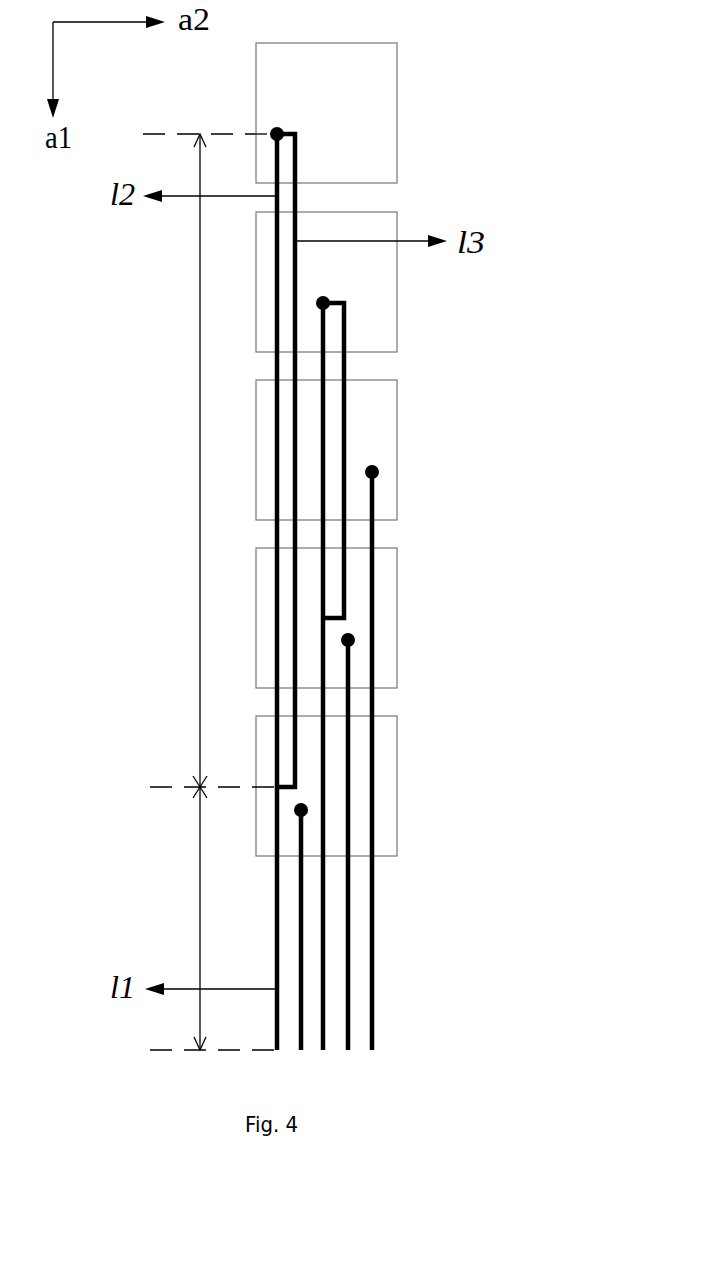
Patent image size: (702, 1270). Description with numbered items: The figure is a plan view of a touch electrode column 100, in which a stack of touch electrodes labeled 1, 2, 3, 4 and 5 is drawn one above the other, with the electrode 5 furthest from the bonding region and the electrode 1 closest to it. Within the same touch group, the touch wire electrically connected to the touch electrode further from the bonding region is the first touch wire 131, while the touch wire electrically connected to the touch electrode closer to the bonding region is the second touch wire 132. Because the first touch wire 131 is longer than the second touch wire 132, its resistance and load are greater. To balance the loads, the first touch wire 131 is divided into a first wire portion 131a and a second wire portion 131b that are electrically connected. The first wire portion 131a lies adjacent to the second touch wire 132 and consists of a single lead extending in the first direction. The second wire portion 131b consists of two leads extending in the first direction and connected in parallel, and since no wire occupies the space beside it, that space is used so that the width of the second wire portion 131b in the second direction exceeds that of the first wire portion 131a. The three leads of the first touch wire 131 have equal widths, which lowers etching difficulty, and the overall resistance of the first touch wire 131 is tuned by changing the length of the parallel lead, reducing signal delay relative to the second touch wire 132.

The display panel 100 is at (458, 76).
The first pixel stage 1 is at (339, 786).
The second pixel stage 2 is at (338, 618).
The third pixel stage 3 is at (338, 450).
The fourth pixel stage 4 is at (338, 282).
The fifth pixel stage 5 is at (338, 113).
The first touch wire 131 is at (171, 588).
The first wire portion 131a is at (203, 918).
The second wire portion 131b is at (212, 457).
The second touch wire 132 is at (303, 969).